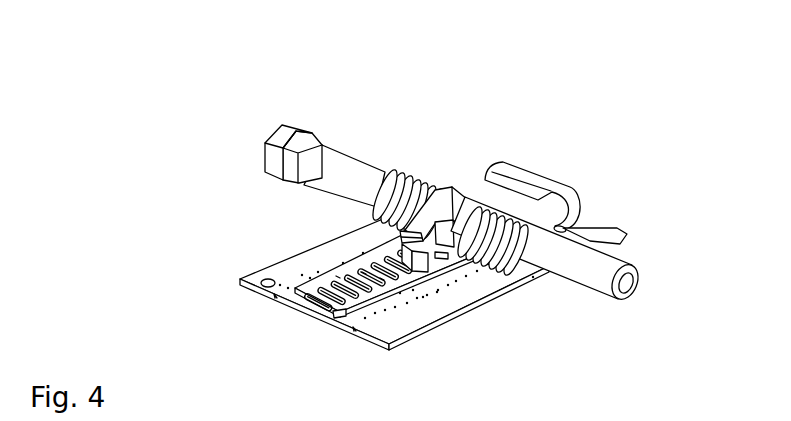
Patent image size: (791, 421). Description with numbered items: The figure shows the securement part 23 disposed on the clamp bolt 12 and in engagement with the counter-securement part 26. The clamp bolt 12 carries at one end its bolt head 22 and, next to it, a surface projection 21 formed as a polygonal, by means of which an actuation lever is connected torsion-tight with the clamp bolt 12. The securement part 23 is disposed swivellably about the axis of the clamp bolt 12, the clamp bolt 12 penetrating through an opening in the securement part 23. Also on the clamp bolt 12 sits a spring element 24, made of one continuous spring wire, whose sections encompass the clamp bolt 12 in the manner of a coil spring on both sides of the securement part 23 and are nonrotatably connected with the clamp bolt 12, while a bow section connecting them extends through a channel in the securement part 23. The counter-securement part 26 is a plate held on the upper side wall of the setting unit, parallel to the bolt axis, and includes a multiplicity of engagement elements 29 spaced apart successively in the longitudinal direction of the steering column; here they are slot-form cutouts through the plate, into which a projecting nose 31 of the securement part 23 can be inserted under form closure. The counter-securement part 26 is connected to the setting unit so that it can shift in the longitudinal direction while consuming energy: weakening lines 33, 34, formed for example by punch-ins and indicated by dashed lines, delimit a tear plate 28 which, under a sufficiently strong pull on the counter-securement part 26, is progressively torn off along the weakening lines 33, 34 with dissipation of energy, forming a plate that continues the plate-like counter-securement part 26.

The clamp bolt 12 is at (598, 268).
The surface projection 21 is at (296, 131).
The bolt head 22 is at (278, 124).
The securement part 23 is at (433, 212).
The spring element 24 is at (391, 172).
The counter-securement part 26 is at (328, 268).
The tear plate 28 is at (382, 310).
The engagement elements 29 is at (378, 279).
The projecting nose 31 is at (430, 263).
The weakening line 33 is at (409, 298).
The weakening line 34 is at (225, 304).